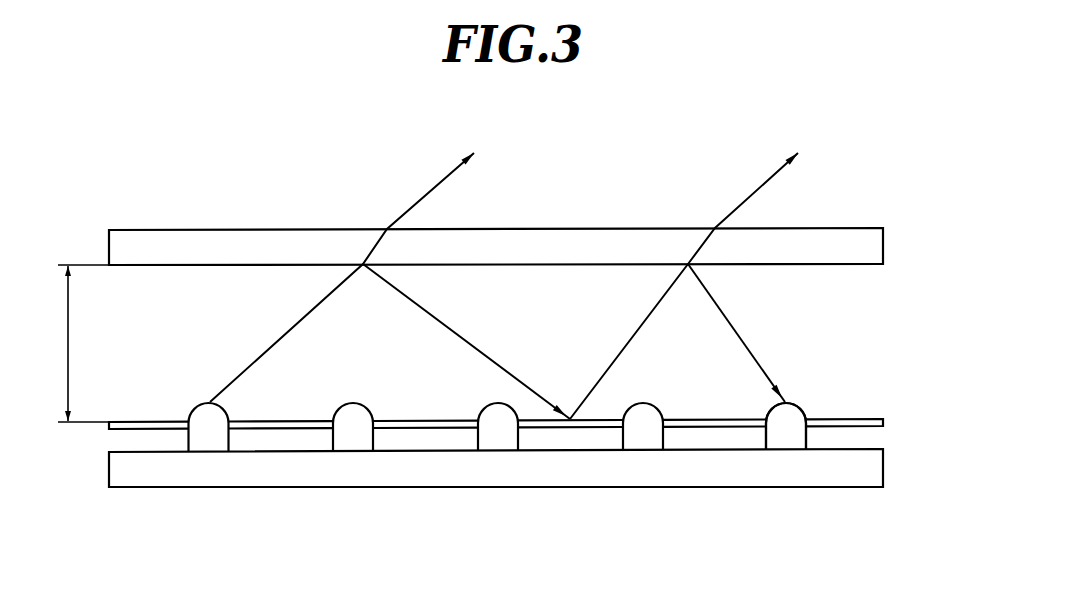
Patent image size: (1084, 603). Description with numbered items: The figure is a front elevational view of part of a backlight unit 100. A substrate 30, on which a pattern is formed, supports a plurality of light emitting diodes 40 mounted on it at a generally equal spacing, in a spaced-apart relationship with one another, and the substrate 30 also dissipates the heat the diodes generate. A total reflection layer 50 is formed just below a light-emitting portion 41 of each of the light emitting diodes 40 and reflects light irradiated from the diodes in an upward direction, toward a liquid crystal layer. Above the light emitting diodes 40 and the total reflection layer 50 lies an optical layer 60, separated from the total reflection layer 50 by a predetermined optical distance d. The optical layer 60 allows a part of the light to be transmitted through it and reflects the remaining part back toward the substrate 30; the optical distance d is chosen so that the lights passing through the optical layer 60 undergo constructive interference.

The backlight unit 100 is at (302, 142).
The optical layer 60 is at (879, 247).
The total reflection layer 50 is at (880, 423).
The substrate 30 is at (877, 468).
The light emitting diodes 40 is at (815, 400).
The light-emitting portion 41 is at (787, 410).